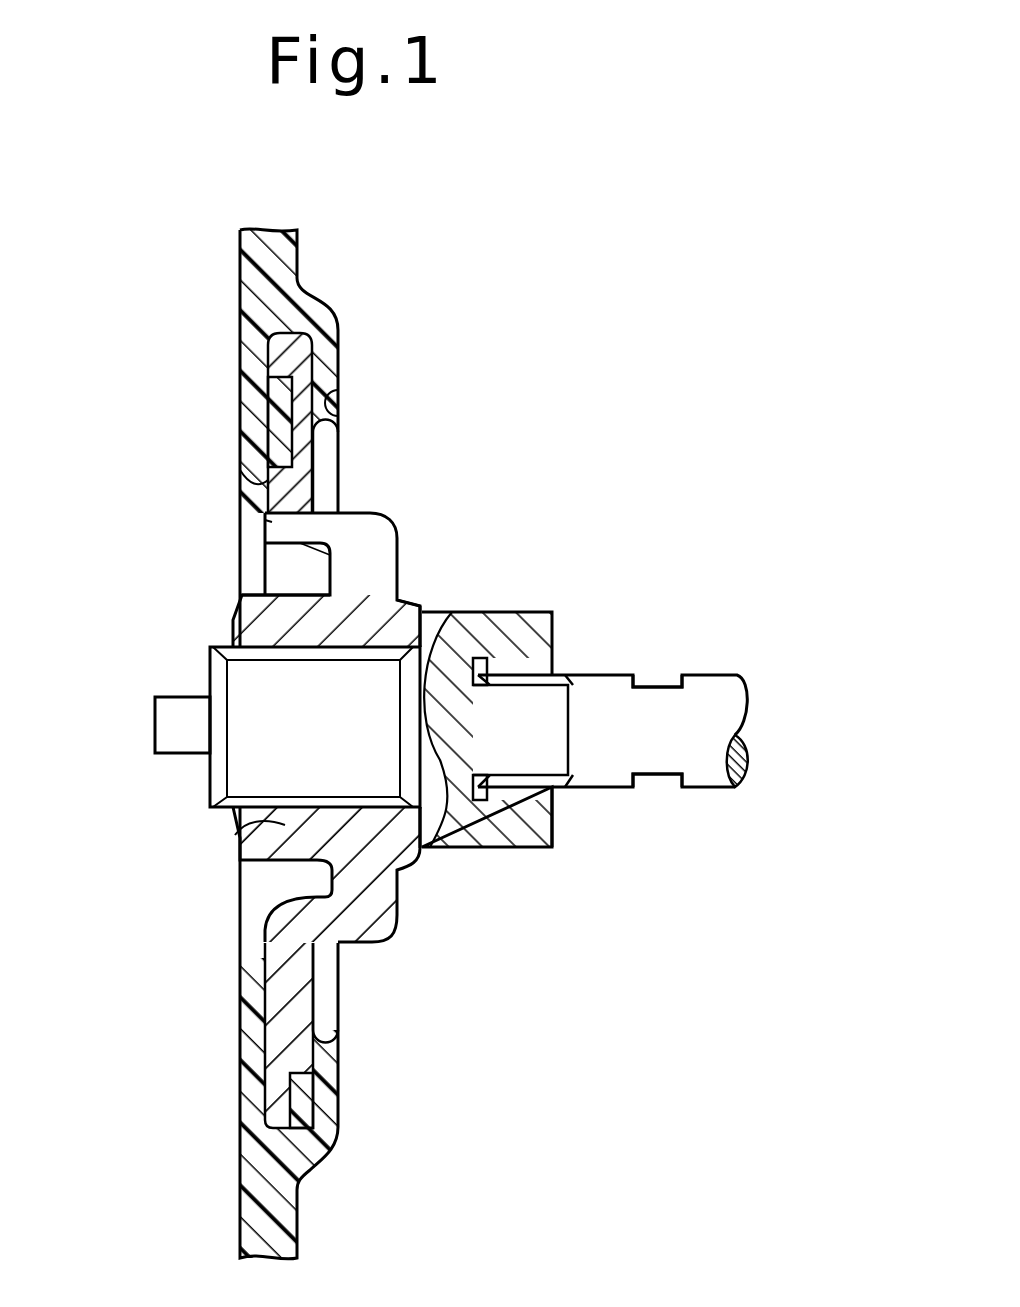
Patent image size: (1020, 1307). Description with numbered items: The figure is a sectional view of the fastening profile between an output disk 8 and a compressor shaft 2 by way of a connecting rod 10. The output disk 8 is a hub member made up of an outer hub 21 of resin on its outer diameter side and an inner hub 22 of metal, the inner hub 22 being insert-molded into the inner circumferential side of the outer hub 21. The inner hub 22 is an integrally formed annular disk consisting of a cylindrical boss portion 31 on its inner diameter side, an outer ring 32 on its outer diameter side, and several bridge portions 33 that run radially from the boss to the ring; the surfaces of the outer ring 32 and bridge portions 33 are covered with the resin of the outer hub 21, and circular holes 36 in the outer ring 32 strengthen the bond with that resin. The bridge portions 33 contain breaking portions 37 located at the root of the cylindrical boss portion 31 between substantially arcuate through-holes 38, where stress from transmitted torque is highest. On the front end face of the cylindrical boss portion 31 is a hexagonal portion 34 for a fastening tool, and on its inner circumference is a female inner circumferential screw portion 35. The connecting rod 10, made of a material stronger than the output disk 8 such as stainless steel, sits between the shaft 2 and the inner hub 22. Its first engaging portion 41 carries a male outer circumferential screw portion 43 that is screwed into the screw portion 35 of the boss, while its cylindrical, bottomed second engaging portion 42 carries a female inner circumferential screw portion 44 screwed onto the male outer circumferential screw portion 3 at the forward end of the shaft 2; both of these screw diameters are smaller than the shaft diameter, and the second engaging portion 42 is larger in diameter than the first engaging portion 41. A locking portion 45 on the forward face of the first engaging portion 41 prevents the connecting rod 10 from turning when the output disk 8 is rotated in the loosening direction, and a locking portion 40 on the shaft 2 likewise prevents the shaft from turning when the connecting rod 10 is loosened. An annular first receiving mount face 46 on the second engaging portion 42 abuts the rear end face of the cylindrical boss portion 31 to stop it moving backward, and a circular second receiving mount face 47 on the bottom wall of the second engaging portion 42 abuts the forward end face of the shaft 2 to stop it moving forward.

The compressor shaft 2 is at (712, 668).
The outer circumferential screw portion 3 is at (552, 826).
The output disk 8 is at (222, 205).
The connecting rod 10 is at (476, 824).
The outer hub 21 is at (245, 268).
The inner hub 22 is at (369, 730).
The cylindrical boss portion 31 is at (337, 730).
The outer ring 32 is at (322, 393).
The bridge portions 33 is at (350, 507).
The hexagonal portion 34 is at (240, 604).
The inner circumferential screw portion 35 is at (300, 660).
The circular holes 36 is at (264, 445).
The breaking portions 37 is at (330, 556).
The arcuate through-holes 38 is at (272, 522).
The locking portion 40 is at (657, 686).
The first engaging portion 41 is at (400, 868).
The second engaging portion 42 is at (512, 830).
The outer circumferential screw portion 43 is at (245, 831).
The inner circumferential screw portion 44 is at (520, 688).
The locking portion 45 is at (172, 727).
The first receiving mount face 46 is at (416, 634).
The second receiving mount face 47 is at (477, 688).